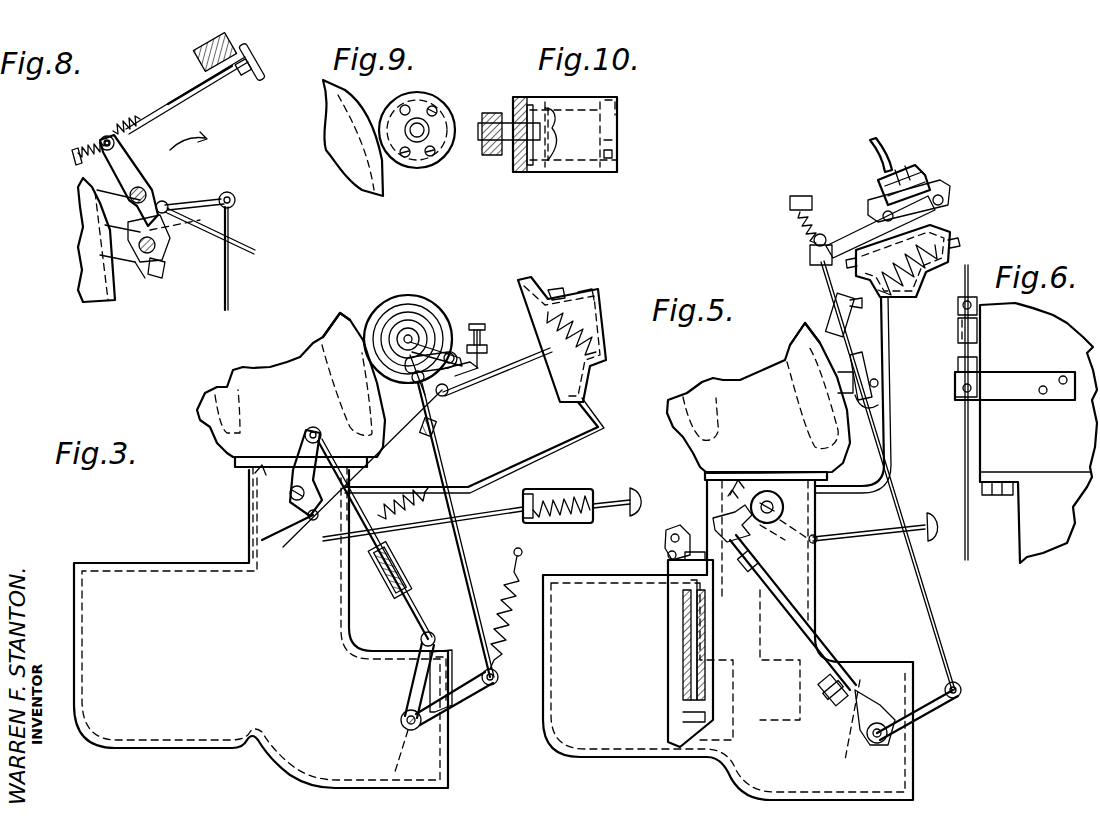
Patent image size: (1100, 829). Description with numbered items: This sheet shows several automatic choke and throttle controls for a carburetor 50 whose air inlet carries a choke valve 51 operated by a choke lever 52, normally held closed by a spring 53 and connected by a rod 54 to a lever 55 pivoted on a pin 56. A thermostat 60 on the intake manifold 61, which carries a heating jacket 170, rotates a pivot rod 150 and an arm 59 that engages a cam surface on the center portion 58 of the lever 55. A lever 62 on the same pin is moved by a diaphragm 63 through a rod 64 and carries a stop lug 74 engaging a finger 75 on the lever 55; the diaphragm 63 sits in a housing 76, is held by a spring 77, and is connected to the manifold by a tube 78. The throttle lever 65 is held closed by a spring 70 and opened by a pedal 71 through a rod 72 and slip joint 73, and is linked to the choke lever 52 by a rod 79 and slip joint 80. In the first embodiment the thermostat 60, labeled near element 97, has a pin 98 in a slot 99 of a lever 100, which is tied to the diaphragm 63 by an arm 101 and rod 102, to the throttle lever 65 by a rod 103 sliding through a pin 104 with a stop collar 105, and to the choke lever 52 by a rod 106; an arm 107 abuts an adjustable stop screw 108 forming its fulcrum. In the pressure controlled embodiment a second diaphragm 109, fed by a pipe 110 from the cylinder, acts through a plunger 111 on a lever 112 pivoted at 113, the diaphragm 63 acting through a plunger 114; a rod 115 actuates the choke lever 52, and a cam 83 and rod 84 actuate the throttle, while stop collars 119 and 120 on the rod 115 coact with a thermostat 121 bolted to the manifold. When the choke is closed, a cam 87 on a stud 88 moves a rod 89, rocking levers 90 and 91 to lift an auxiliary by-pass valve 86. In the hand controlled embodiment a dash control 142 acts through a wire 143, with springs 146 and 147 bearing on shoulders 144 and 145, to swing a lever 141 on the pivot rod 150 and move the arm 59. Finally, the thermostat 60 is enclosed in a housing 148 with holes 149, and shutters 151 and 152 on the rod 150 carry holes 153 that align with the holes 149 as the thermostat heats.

In FIG. 3, the carburetor 50 is at (261, 629).
In FIG. 5, the choke valve 51 is at (905, 770).
In FIG. 3, the choke valve 51 is at (392, 737).
In FIG. 5, the choke lever 52 is at (935, 705).
In FIG. 3, the choke lever 52 is at (458, 703).
In FIG. 3, the spring 53 is at (508, 610).
In FIG. 8, the rod 54 is at (222, 260).
In FIG. 8, the lever 55 is at (229, 192).
In FIG. 8, the pin 56 is at (132, 257).
In FIG. 8, the jaw 58 is at (170, 236).
In FIG. 8, the arm 59 is at (80, 226).
In FIG. 9, the thermostat 60 is at (390, 110).
In FIG. 10, the thermostat 60 is at (553, 104).
In FIG. 6, the intake manifold 61 is at (1038, 433).
In FIG. 5, the intake manifold 61 is at (750, 380).
In FIG. 3, the intake manifold 61 is at (262, 372).
In FIG. 8, the lever 62 is at (168, 205).
In FIG. 3, the diaphragm 63 is at (560, 288).
In FIG. 8, the rod 64 is at (248, 252).
In FIG. 3, the throttle lever 65 is at (303, 437).
In FIG. 3, the spring 70 is at (404, 518).
In FIG. 5, the pedal 71 is at (930, 515).
In FIG. 3, the pedal 71 is at (628, 494).
In FIG. 3, the rod 72 is at (470, 512).
In FIG. 3, the slip joint 73 is at (545, 485).
In FIG. 8, the stop lug 74 is at (165, 270).
In FIG. 8, the finger 75 is at (142, 276).
In FIG. 3, the housing 76 is at (598, 364).
In FIG. 3, the spring 77 is at (588, 292).
In FIG. 3, the tube 78 is at (540, 460).
In FIG. 3, the rod 79 is at (355, 548).
In FIG. 3, the slip joint 80 is at (404, 558).
In FIG. 5, the cam 83 is at (855, 695).
In FIG. 5, the rod 84 is at (810, 636).
In FIG. 5, the auxiliary by-pass valve 86 is at (678, 640).
In FIG. 5, the cam 87 is at (855, 728).
In FIG. 5, the stud 88 is at (890, 736).
In FIG. 5, the rod 89 is at (712, 520).
In FIG. 5, the lever 90 is at (665, 545).
In FIG. 5, the lever 91 is at (688, 562).
In FIG. 3, the arm 97 is at (418, 336).
In FIG. 3, the pin 98 is at (452, 350).
In FIG. 3, the slot 99 is at (440, 380).
In FIG. 3, the lever 100 is at (460, 385).
In FIG. 3, the arm 101 is at (444, 395).
In FIG. 3, the rod 102 is at (492, 362).
In FIG. 3, the rod 103 is at (400, 440).
In FIG. 3, the pin 104 is at (308, 516).
In FIG. 3, the stop collar 105 is at (290, 497).
In FIG. 3, the rod 106 is at (470, 607).
In FIG. 3, the arm 107 is at (470, 372).
In FIG. 3, the adjustable stop screw 108 is at (486, 327).
In FIG. 5, the diaphragm 109 is at (905, 158).
In FIG. 5, the pipe 110 is at (884, 140).
In FIG. 5, the plunger 111 is at (942, 184).
In FIG. 5, the lever 112 is at (842, 232).
In FIG. 5, the pivot 113 is at (948, 190).
In FIG. 5, the plunger 114 is at (870, 250).
In FIG. 6, the rod 115 is at (964, 282).
In FIG. 5, the rod 115 is at (810, 262).
In FIG. 6, the stop collar 119 is at (958, 365).
In FIG. 6, the stop collar 120 is at (958, 322).
In FIG. 5, the stop collar 120 is at (830, 298).
In FIG. 6, the thermostat 121 is at (1016, 382).
In FIG. 5, the thermostat 121 is at (878, 400).
In FIG. 8, the lever 141 is at (128, 165).
In FIG. 8, the dash control 142 is at (258, 40).
In FIG. 8, the wire 143 is at (182, 108).
In FIG. 8, the shoulder 144 is at (198, 62).
In FIG. 8, the shoulder 145 is at (73, 150).
In FIG. 8, the spring 146 is at (122, 110).
In FIG. 8, the spring 147 is at (104, 140).
In FIG. 9, the housing 148 is at (424, 168).
In FIG. 10, the housing 148 is at (572, 170).
In FIG. 3, the housing 148 is at (390, 292).
In FIG. 9, the holes 149 is at (434, 106).
In FIG. 10, the holes 149 is at (622, 104).
In FIG. 8, the pivot rod 150 is at (146, 193).
In FIG. 10, the pivot rod 150 is at (490, 142).
In FIG. 10, the shutter 151 is at (512, 102).
In FIG. 10, the shutter 152 is at (616, 156).
In FIG. 10, the holes 153 is at (521, 171).
In FIG. 5, the heating jacket 170 is at (800, 330).
In FIG. 3, the heating jacket 170 is at (330, 328).